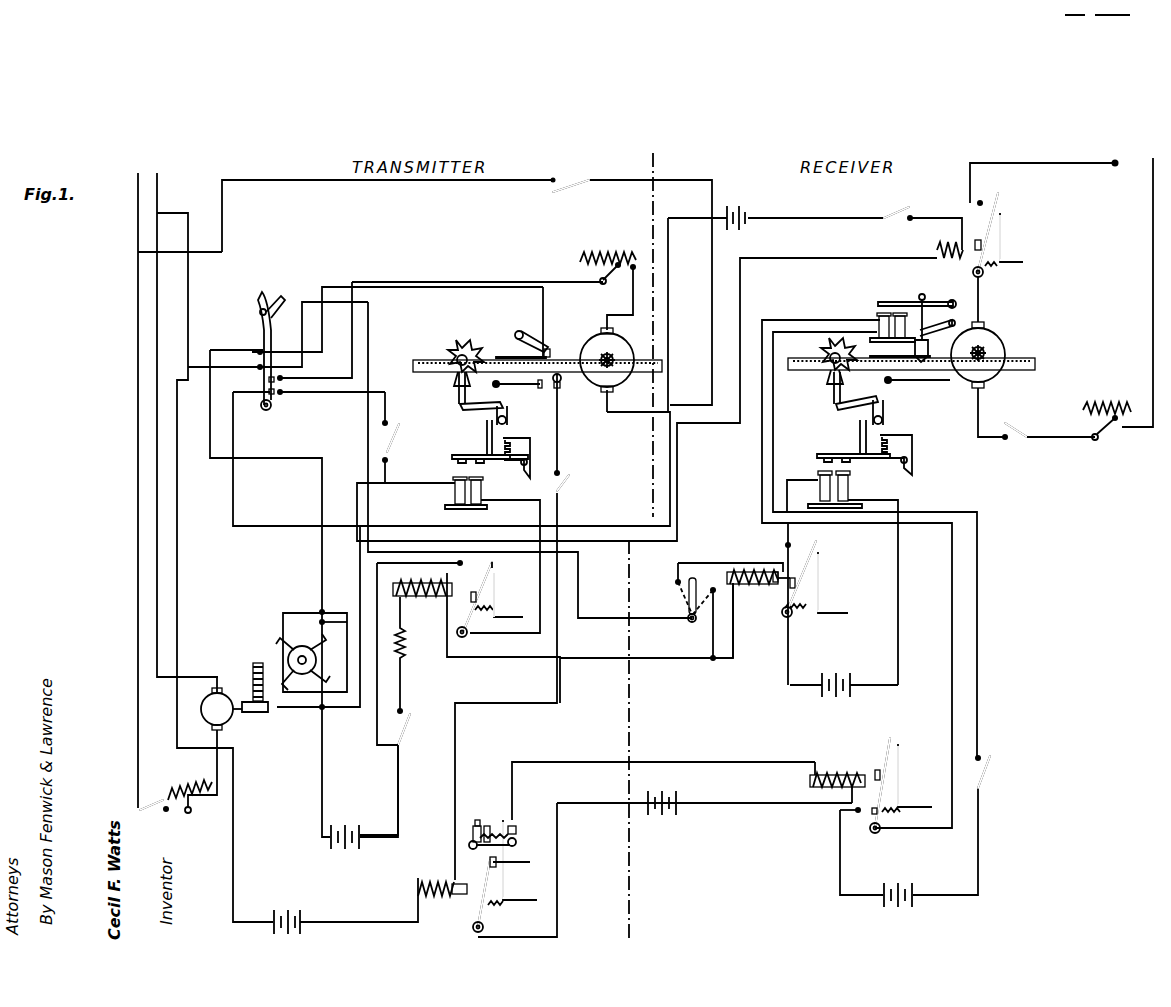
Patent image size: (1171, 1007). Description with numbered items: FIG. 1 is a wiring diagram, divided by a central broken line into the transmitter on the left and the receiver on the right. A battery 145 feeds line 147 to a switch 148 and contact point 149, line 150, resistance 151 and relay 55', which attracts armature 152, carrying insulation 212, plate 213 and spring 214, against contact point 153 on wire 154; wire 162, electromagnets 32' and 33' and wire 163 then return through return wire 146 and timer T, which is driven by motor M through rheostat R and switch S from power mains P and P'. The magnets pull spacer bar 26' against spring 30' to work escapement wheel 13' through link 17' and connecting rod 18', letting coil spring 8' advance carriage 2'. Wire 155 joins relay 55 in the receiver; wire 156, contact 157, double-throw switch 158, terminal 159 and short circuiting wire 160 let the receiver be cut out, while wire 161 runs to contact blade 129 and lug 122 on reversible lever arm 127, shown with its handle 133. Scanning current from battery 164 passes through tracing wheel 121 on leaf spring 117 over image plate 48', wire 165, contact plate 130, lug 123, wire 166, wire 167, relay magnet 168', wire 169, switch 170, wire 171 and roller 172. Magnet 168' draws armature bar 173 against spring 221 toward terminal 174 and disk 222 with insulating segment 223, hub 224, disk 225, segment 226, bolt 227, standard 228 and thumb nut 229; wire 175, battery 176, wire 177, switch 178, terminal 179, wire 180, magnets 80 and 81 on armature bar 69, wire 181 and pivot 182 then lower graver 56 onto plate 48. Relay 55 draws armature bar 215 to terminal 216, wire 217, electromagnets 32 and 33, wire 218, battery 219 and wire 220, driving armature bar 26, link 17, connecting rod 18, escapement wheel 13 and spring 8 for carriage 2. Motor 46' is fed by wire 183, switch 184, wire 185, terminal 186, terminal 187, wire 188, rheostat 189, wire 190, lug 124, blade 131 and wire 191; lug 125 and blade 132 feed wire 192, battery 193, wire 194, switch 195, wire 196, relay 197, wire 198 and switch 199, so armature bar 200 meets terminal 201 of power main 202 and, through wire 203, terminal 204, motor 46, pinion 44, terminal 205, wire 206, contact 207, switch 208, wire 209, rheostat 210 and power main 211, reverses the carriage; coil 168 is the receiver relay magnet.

The power main P is at (162, 490).
The power main P' is at (188, 547).
The wire 183 is at (224, 216).
The manually controlled switch 184 is at (553, 194).
The wire 185 is at (632, 172).
The wire 192 is at (700, 210).
The terminal of motor 46' 186 is at (610, 390).
The wire 190 is at (458, 278).
The terminal or lug 124 is at (305, 377).
The contact lug 125 is at (292, 396).
The contact plate 130 is at (270, 355).
The wire 165 is at (322, 338).
The contact lug 123 is at (258, 366).
The wire 161 is at (369, 314).
The contact blade 131 is at (258, 386).
The return wire 146 is at (244, 350).
The wire 191 is at (189, 312).
The wire 166 is at (178, 425).
The contact lug 122 is at (258, 350).
The contact blade 129 is at (260, 348).
The handle 133 is at (296, 284).
The reversible lever arm 127 is at (263, 410).
The contact blade 132 is at (275, 398).
The wire 198 is at (398, 390).
The manually controlled switch 199 is at (420, 420).
The wire 188 is at (628, 280).
The rheostat 189 is at (614, 252).
The terminal of motor 46' 187 is at (606, 326).
The motor 46' is at (613, 377).
The carriage 2' is at (528, 353).
The escapement wheel 13' is at (466, 353).
The original image plate 48' is at (521, 335).
The leaf spring 117 is at (550, 348).
The scanning or tracing wheel 121 is at (550, 356).
The coil spring 8' is at (517, 389).
The roller 172 is at (557, 390).
The wire 171 is at (558, 430).
The manually controlled switch 170 is at (570, 478).
The link 17' is at (448, 389).
The connecting rod 18' is at (478, 417).
The spacer bar 26' is at (490, 441).
The spring 30' is at (524, 447).
The wire 163 is at (448, 482).
The electromagnet 32' is at (453, 493).
The electromagnet 33' is at (504, 501).
The contact point 153 is at (460, 563).
The armature 152 is at (494, 564).
The wire 162 is at (466, 636).
The strip of insulation 212 is at (484, 596).
The plate of conducting material 213 is at (472, 604).
The spring 214 is at (490, 620).
The wire 155 is at (600, 652).
The wire 169 is at (546, 704).
The relay 55' is at (415, 580).
The resistance 151 is at (402, 638).
The line 150 is at (402, 688).
The contact point 149 is at (403, 708).
The manually controlled switch 148 is at (411, 736).
The line 147 is at (401, 786).
The wire 154 is at (377, 597).
The timer T is at (275, 658).
The motor M is at (228, 735).
The hand controlled switch S is at (146, 812).
The rheostat / relay R is at (326, 777).
The battery 145 is at (358, 844).
The battery 164 is at (292, 908).
The wire 167 is at (378, 924).
The relay magnet 168' is at (425, 881).
The armature bar 173 is at (478, 906).
The spring 221 is at (500, 904).
The fixed standard 228 is at (508, 870).
The segment of insulation 226 is at (530, 860).
The bolt 227 is at (470, 848).
The disk 222 is at (474, 834).
The insulating segment 223 is at (474, 818).
The hub 224 is at (486, 824).
The disk 225 is at (494, 822).
The thumb nut 229 is at (504, 830).
The contact 157 is at (677, 584).
The terminal 159 is at (714, 586).
The short circuiting wire 160 is at (712, 640).
The double-throw switch 158 is at (688, 622).
The wire 156 is at (740, 566).
The battery 193 is at (745, 212).
The wire 194 is at (843, 212).
The manually controlled switch 195 is at (908, 202).
The wire 196 is at (936, 225).
The relay 197 is at (936, 250).
The relay armature bar 200 is at (1002, 222).
The terminal 201 is at (980, 203).
The power main 202 is at (1074, 172).
The wire 203 is at (984, 290).
The terminal of motor 46 204 is at (986, 326).
The motor 46 is at (995, 355).
The pinion 44 is at (986, 354).
The carriage 2 is at (919, 370).
The terminal of motor 46 205 is at (988, 388).
The wire 206 is at (977, 412).
The terminal contact 207 is at (1005, 440).
The manually controlled switch 208 is at (1016, 420).
The wire 209 is at (1060, 440).
The rheostat 210 is at (1132, 398).
The power main 211 is at (1152, 272).
The armature bar 69 is at (896, 304).
The magnet 80 is at (884, 316).
The magnet 81 is at (922, 306).
The engraving tooth / graver 56 is at (922, 348).
The wire 181 is at (834, 318).
The wire 180 is at (784, 334).
The escapement wheel 13 is at (844, 356).
The plate 48 is at (894, 351).
The coil spring 8 is at (917, 388).
The link 17 is at (822, 388).
The connecting rod 18 is at (851, 410).
The armature bar 26 is at (864, 447).
The wire 217 is at (806, 474).
The solenoid / electromagnet 32 is at (828, 489).
The solenoid / electromagnet 33 is at (867, 578).
The terminal 216 is at (786, 545).
The armature bar 215 is at (820, 544).
The relay 55 is at (758, 591).
The wire 218 is at (897, 578).
The battery 219 is at (840, 668).
The wire 220 is at (787, 654).
The coil 168 is at (837, 773).
The pivotal connection 182 is at (876, 834).
The terminal 174 is at (852, 810).
The wire 175 is at (840, 862).
The battery 176 is at (888, 912).
The wire 177 is at (980, 848).
The manually controlled switch 178 is at (988, 780).
The terminal 179 is at (980, 758).